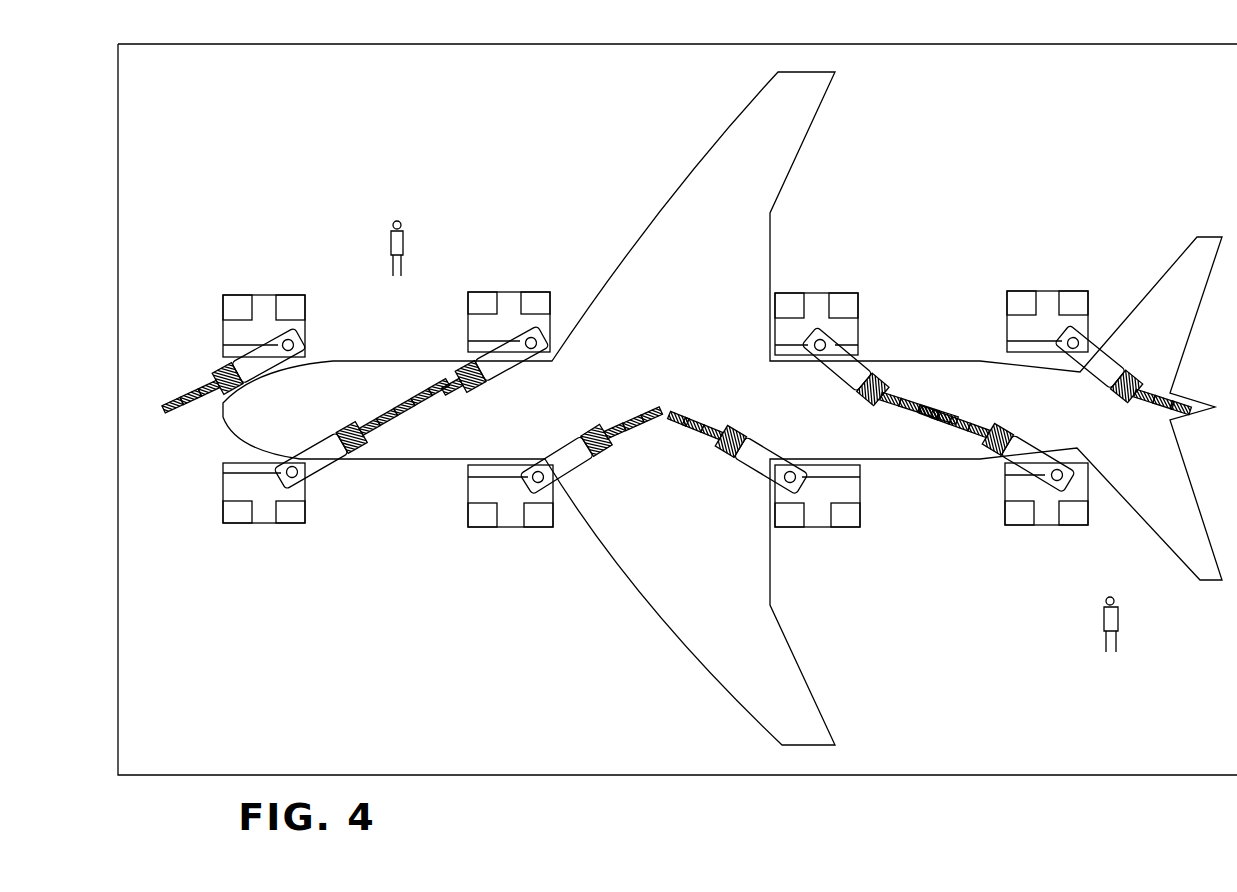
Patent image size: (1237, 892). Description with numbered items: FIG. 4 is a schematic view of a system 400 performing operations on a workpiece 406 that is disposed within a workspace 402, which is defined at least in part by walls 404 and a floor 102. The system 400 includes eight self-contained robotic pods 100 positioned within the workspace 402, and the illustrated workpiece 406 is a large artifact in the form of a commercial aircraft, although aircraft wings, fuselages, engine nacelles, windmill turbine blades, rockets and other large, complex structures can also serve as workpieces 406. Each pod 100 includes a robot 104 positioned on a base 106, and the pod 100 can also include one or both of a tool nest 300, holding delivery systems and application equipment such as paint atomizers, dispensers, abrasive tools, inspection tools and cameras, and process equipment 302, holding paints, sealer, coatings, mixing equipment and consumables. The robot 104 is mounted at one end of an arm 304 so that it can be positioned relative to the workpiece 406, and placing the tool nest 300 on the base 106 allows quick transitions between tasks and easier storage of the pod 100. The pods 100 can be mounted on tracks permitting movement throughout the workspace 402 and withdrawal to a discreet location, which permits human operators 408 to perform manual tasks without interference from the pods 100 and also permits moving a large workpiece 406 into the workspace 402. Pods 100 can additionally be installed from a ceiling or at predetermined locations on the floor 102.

The self-contained robotic pod 100 is at (237, 258).
The floor 102 is at (405, 638).
The robot 104 is at (175, 405).
The base 106 is at (277, 305).
The tool nest 300 is at (228, 310).
The process equipment 302 is at (300, 305).
The arm 304 is at (280, 365).
The system 400 is at (440, 150).
The workspace 402 is at (297, 108).
The walls 404 is at (947, 47).
The workpiece 406 is at (701, 190).
The human operators 408 is at (393, 240).